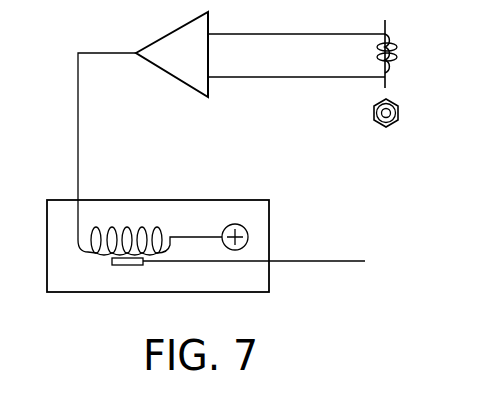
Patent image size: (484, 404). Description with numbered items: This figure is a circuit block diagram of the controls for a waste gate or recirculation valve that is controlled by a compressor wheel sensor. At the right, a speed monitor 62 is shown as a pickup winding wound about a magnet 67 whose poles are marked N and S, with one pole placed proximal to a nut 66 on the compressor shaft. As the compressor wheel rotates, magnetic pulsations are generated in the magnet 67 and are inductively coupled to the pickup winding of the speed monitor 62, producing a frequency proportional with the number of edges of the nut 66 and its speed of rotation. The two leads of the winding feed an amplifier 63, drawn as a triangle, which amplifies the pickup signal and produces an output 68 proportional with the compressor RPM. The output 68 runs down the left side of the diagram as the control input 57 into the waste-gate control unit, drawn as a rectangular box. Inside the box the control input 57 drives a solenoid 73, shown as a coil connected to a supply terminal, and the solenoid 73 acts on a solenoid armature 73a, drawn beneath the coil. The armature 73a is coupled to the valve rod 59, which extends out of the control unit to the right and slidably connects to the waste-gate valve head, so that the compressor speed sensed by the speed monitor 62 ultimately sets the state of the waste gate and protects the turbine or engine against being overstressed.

The amplifier 63 is at (178, 27).
The output 68 is at (78, 117).
The control input 57 is at (76, 172).
The magnet 67 is at (384, 23).
The speed monitor 62 is at (398, 50).
The nut 66 is at (393, 126).
The solenoid 73 is at (128, 227).
The solenoid armature 73a is at (115, 266).
The valve rod 59 is at (326, 260).